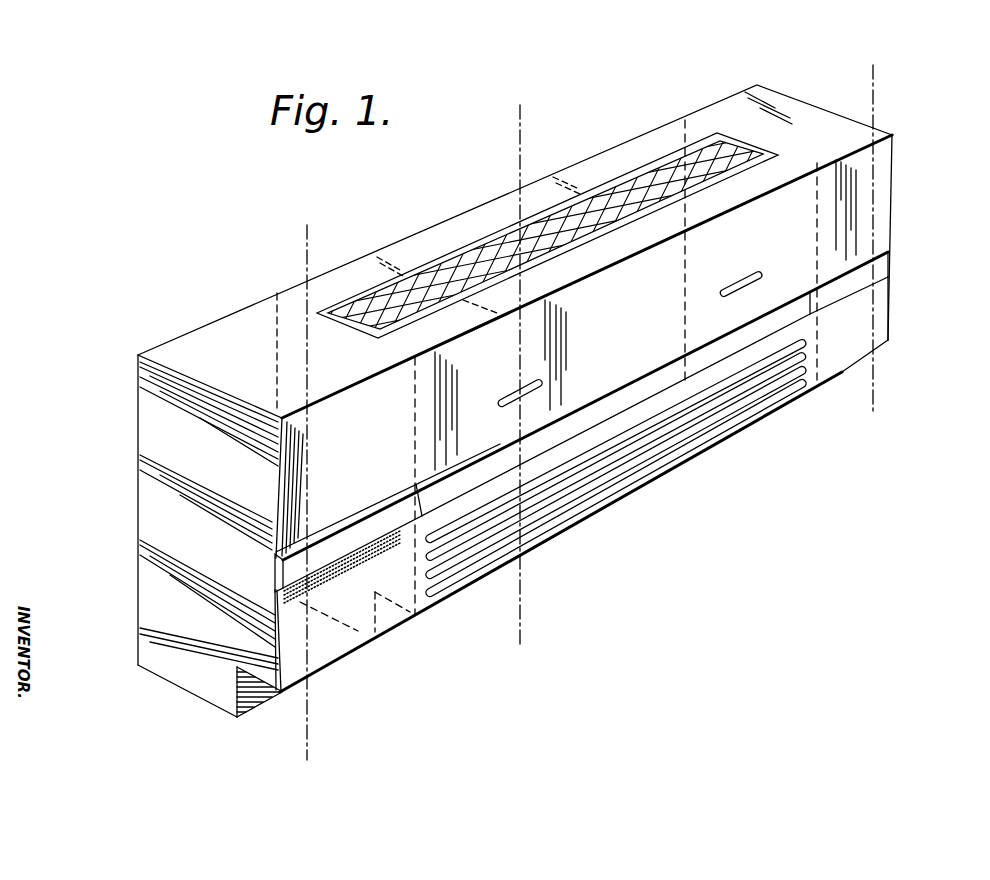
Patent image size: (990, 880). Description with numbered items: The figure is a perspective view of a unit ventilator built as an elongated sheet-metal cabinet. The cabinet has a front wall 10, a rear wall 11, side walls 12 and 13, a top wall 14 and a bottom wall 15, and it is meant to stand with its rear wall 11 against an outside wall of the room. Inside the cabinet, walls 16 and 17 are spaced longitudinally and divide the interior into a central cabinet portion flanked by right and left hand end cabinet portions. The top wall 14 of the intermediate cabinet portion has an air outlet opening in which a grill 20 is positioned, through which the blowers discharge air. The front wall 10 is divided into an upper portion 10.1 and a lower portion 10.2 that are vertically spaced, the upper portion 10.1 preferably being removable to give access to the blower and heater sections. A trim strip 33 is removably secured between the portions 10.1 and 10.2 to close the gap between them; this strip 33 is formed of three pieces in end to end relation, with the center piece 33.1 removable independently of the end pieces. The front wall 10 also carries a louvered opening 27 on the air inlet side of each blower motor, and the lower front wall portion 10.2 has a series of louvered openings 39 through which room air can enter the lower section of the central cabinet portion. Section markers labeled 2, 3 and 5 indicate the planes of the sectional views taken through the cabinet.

The front wall 10 is at (878, 183).
The upper portion 10.1 is at (638, 250).
The lower portion 10.2 is at (890, 316).
The rear wall 11 is at (203, 350).
The side wall 12 is at (166, 412).
The side wall 13 is at (776, 125).
The top wall 14 is at (606, 163).
The bottom wall 15 is at (198, 673).
The wall 16 is at (414, 434).
The wall 17 is at (815, 207).
The grill 20 is at (425, 262).
The louvered opening 27 is at (503, 399).
The trim strip 33 is at (352, 560).
The center piece 33.1 is at (617, 398).
The louvered openings 39 is at (650, 438).
The section line 2- 2 is at (503, 156).
The section line 3- 3 is at (855, 96).
The section line 5- 5 is at (328, 224).